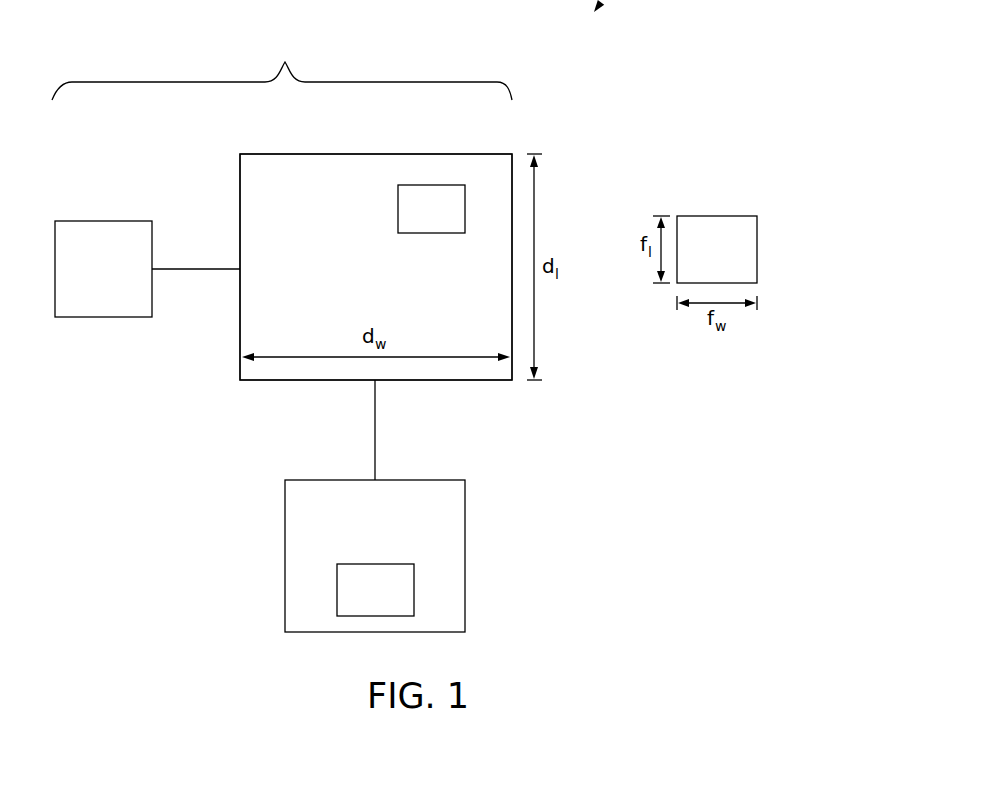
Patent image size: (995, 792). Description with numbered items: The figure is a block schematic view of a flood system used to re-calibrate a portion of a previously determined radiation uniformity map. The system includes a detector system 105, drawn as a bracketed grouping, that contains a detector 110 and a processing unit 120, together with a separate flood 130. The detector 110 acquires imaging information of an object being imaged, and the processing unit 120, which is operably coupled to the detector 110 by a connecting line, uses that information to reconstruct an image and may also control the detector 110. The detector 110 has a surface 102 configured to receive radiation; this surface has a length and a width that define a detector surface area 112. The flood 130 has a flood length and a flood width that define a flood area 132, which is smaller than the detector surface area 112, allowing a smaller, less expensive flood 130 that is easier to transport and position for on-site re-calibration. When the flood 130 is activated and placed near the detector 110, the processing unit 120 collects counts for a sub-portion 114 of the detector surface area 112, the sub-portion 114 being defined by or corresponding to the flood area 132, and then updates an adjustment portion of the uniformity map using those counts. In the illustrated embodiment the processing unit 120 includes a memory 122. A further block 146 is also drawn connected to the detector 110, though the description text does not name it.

The surface 102 is at (473, 168).
The detector system 105 is at (290, 58).
The detector 110 is at (283, 154).
The detector surface area 112 is at (258, 190).
The sub-portion 114 is at (432, 233).
The processing unit 120 is at (375, 506).
The memory 122 is at (396, 602).
The flood 130 is at (713, 216).
The flood area 132 is at (741, 246).
The input device 146 is at (82, 282).